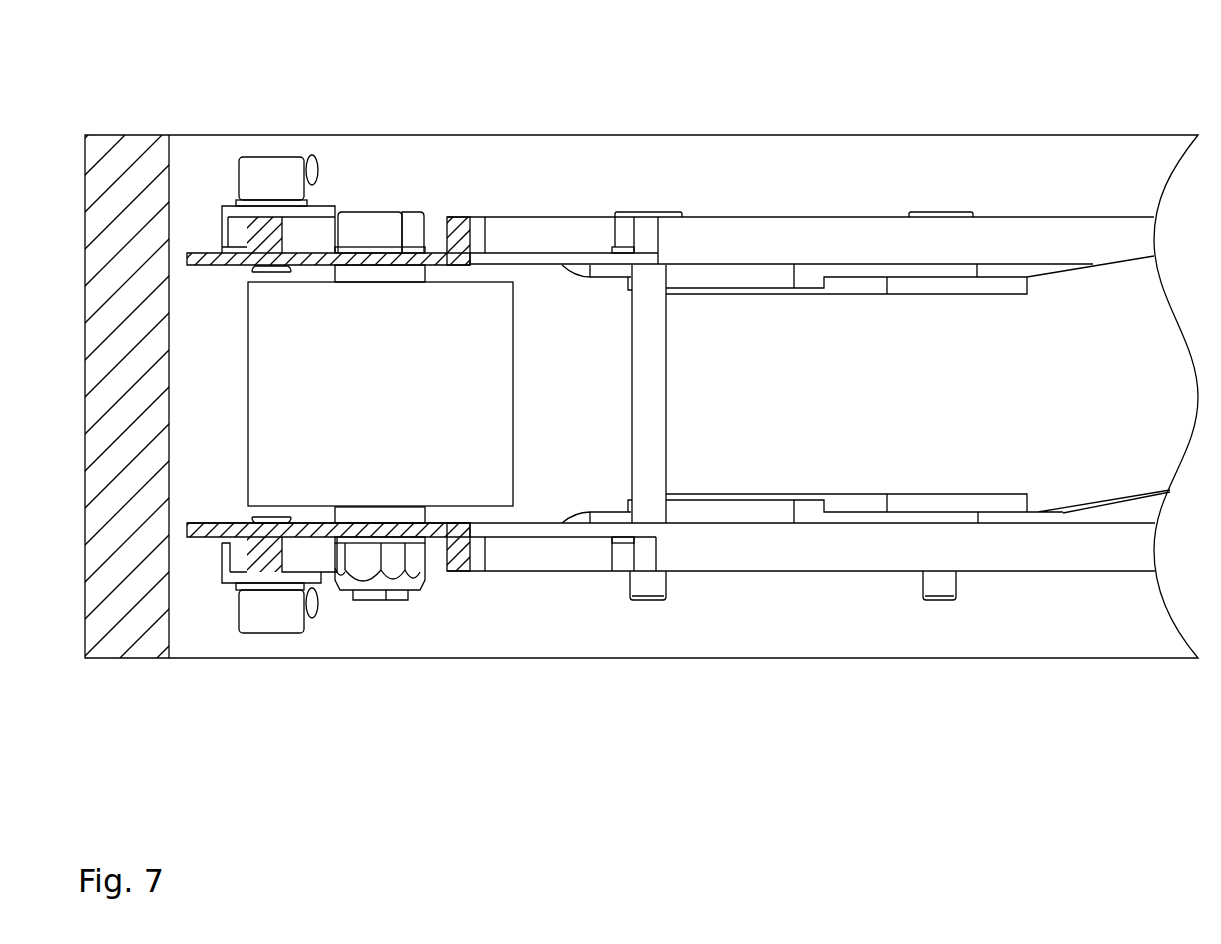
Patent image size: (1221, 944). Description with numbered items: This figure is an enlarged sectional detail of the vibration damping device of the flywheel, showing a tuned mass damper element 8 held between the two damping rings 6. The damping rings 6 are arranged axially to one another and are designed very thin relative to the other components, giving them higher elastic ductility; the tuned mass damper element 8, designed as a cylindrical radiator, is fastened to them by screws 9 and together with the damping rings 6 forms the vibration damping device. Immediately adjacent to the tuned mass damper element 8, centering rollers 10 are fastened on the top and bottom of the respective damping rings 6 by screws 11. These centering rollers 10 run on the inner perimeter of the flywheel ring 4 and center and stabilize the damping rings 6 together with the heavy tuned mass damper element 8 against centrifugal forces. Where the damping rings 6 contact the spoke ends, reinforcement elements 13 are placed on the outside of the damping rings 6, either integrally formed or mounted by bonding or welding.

The flywheel ring 4 is at (93, 560).
The damping ring 6 is at (308, 258).
The tuned mass damper element 8 is at (502, 389).
The screw 9 is at (375, 225).
The centering roller 10 is at (330, 225).
The screw 11 is at (265, 163).
The reinforcement element 13 is at (458, 225).